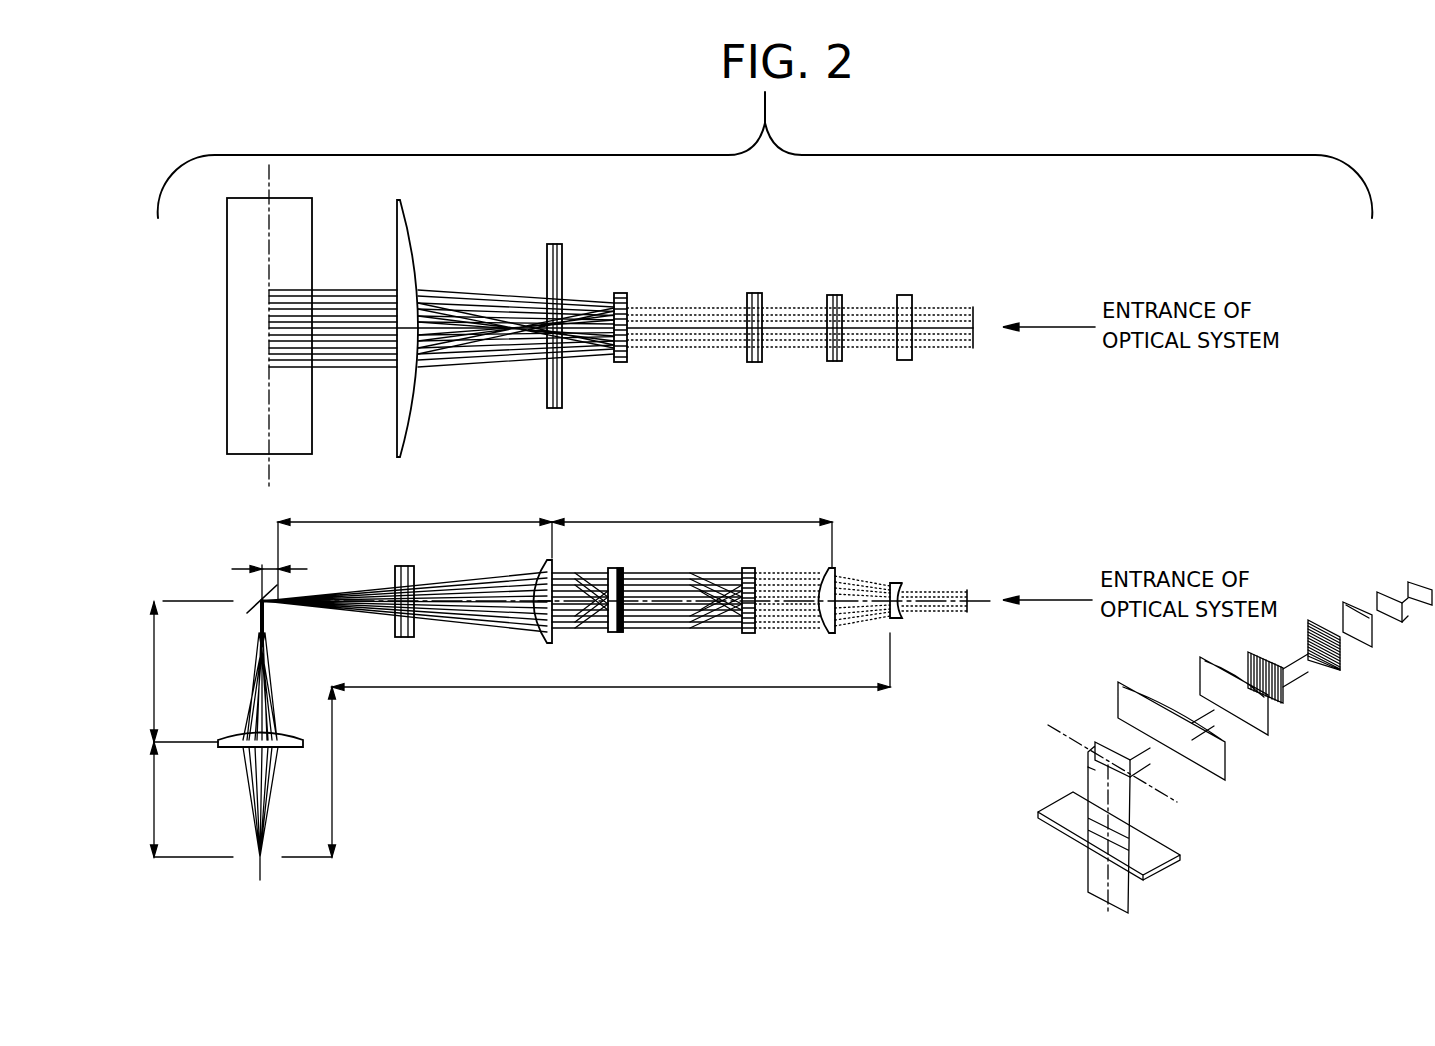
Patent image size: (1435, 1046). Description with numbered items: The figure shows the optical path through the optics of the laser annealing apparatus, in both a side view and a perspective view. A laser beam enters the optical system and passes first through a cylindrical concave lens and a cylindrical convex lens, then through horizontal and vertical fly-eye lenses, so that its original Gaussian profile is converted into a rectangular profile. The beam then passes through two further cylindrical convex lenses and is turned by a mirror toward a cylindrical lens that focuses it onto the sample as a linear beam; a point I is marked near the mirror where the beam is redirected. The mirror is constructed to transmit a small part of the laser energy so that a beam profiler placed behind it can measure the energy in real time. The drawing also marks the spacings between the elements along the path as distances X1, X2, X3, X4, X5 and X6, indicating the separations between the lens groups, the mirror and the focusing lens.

The image point I is at (279, 609).
The distance X1 is at (415, 558).
The distance X2 is at (692, 542).
The distance X3 is at (259, 566).
The distance X4 is at (181, 672).
The distance X5 is at (238, 799).
The distance X6 is at (334, 772).